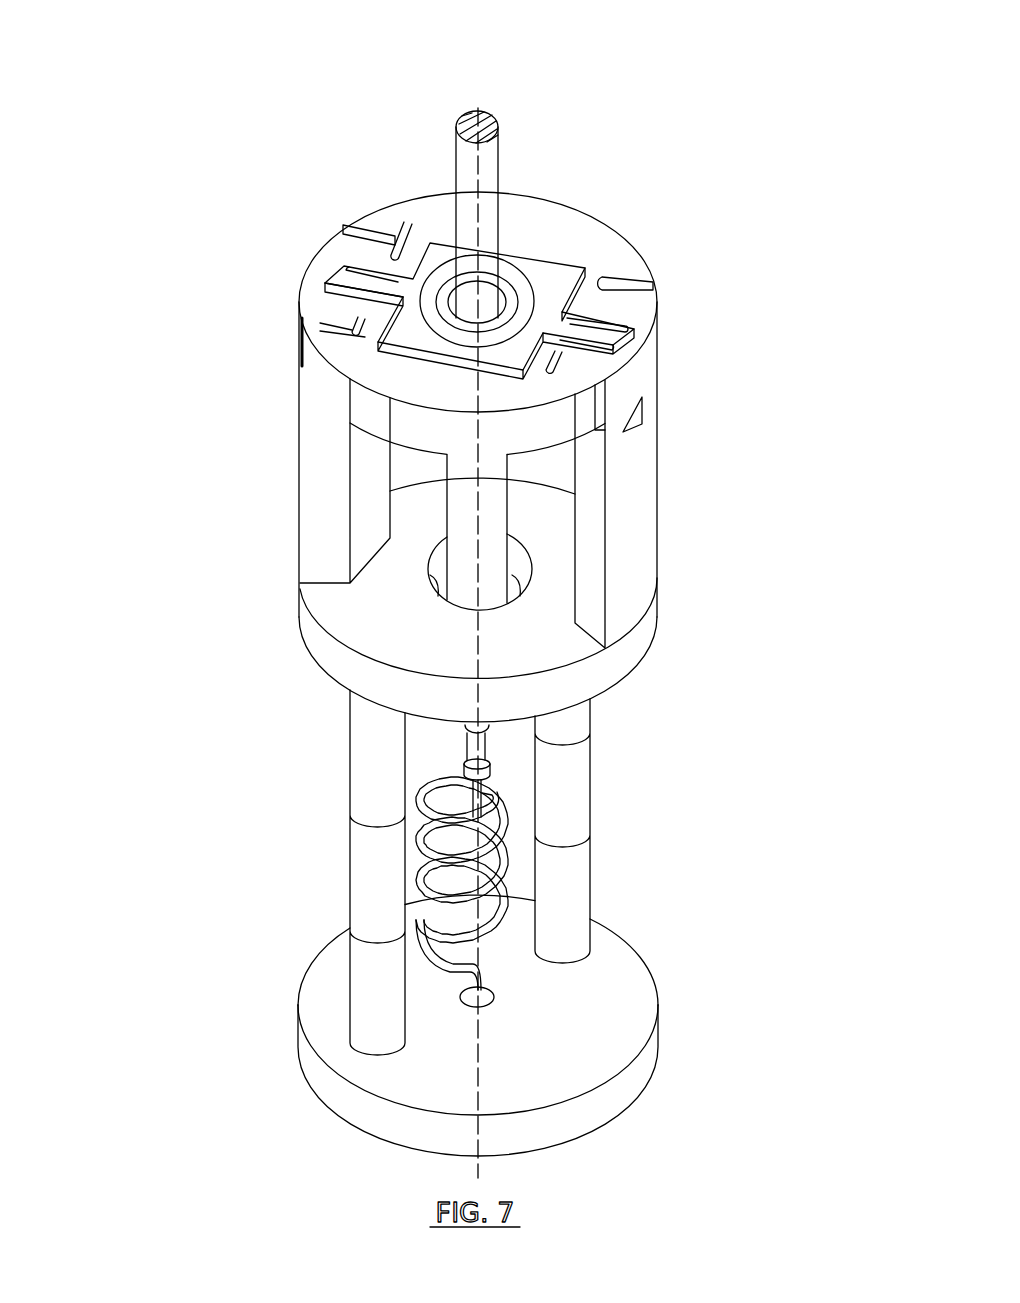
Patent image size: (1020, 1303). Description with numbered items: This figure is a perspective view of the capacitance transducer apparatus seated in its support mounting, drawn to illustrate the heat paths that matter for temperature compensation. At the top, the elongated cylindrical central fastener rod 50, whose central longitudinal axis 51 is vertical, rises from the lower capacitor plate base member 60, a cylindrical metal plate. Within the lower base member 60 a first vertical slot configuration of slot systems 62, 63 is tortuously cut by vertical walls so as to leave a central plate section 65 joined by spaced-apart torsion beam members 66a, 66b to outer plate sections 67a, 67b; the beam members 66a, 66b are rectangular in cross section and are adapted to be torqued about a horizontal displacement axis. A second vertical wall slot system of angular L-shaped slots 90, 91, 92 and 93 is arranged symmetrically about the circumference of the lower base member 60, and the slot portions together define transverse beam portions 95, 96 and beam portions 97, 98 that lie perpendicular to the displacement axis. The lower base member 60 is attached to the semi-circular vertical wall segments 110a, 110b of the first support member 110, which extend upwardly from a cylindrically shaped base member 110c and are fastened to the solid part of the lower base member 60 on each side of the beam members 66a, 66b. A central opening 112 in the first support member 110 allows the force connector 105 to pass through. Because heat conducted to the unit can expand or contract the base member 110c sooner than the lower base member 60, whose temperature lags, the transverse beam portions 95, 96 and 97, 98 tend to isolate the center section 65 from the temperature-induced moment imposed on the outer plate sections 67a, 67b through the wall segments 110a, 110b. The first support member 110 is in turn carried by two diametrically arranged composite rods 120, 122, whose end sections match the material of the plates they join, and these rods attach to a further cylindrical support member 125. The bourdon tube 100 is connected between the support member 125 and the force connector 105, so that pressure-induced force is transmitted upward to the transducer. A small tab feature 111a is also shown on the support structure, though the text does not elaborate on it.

The central fastener rod 50 is at (500, 145).
The central longitudinal axis 51 is at (481, 200).
The lower capacitor plate base member 60 is at (628, 378).
The slot system 62 is at (545, 285).
The slot system 63 is at (420, 353).
The central plate section 65 is at (588, 283).
The torsion beam member 66a is at (580, 330).
The torsion beam member 66b is at (365, 280).
The outer plate section 67a is at (628, 338).
The outer plate section 67b is at (327, 267).
The L-shaped slot 90 is at (567, 376).
The L-shaped slot 91 is at (650, 274).
The L-shaped slot 92 is at (390, 226).
The L-shaped slot 93 is at (303, 322).
The transverse beam portion 95 is at (536, 365).
The transverse beam portion 96 is at (628, 281).
The beam portion 97 is at (412, 250).
The beam portion 98 is at (363, 337).
The bourdon tube 100 is at (417, 873).
The force connector 105 is at (488, 753).
The first support member 110 is at (633, 523).
The vertical wall segment 110a is at (626, 591).
The vertical wall segment 110b is at (315, 493).
The base member 110c is at (503, 644).
The locking tab 111a is at (630, 410).
The central opening 112 is at (433, 581).
The composite rod 120 is at (373, 778).
The composite rod 122 is at (570, 822).
The support member 125 is at (540, 1037).